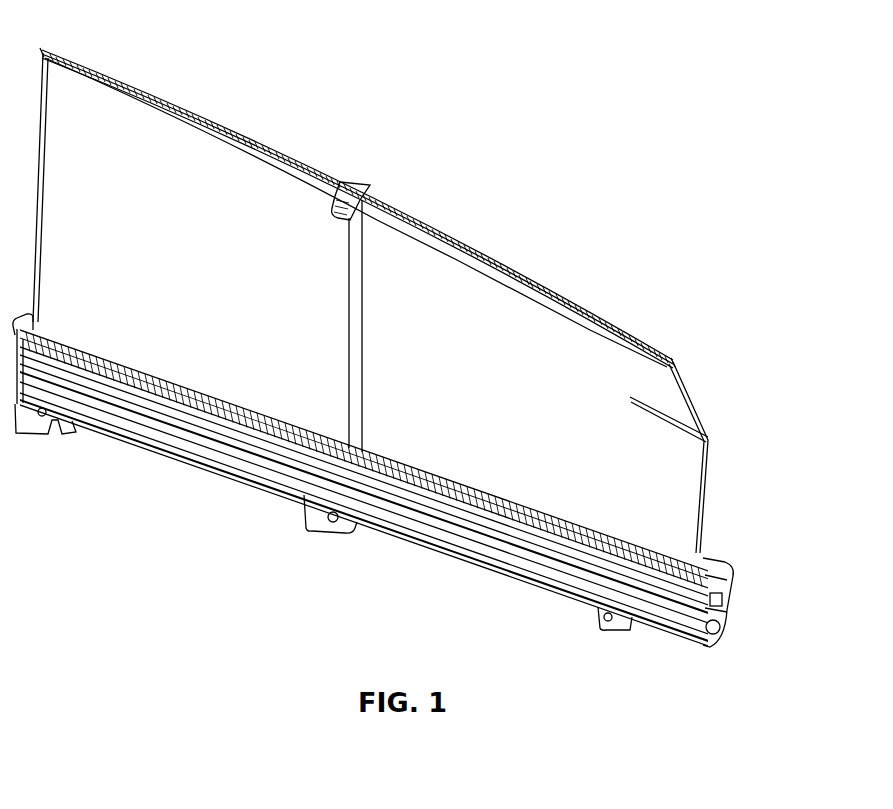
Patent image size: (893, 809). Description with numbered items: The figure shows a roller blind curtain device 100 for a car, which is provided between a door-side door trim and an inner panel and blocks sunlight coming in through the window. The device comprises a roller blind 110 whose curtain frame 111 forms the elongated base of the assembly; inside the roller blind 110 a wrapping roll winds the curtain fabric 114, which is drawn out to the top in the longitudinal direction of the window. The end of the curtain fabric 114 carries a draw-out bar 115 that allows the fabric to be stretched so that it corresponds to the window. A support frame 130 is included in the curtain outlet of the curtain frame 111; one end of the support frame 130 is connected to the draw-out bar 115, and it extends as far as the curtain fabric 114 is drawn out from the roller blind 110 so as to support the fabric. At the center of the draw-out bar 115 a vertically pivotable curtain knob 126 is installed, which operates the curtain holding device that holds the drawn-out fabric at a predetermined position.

The roller blind curtain device 100 is at (539, 240).
The roller blind 110 is at (720, 548).
The curtain frame 111 is at (518, 560).
The curtain fabric 114 is at (553, 362).
The draw-out bar 115 is at (462, 240).
The curtain knob 126 is at (352, 178).
The support frame 130 is at (357, 268).